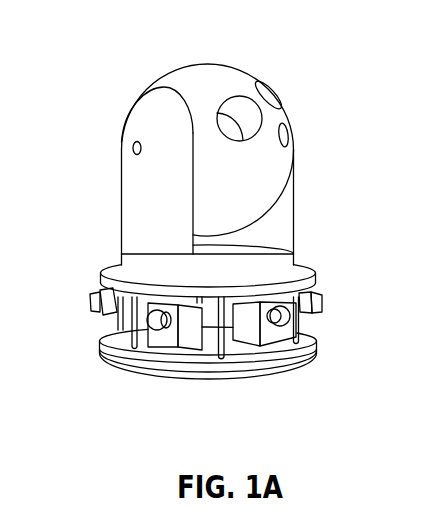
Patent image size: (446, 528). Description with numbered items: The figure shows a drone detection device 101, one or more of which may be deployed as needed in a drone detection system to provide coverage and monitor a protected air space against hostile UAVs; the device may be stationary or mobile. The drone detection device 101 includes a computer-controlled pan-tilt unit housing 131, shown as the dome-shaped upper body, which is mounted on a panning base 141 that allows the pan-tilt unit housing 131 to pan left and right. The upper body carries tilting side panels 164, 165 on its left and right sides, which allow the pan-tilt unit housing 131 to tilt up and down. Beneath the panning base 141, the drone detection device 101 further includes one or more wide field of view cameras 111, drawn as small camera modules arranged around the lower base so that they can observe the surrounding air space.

The drone detection device 101 is at (208, 52).
The wide field of view camera 111 is at (327, 295).
The pan-tilt unit (PTU) housing 131 is at (262, 165).
The panning base 141 is at (147, 265).
The tilting side panel 164 is at (150, 195).
The tilting side panel 165 is at (278, 223).